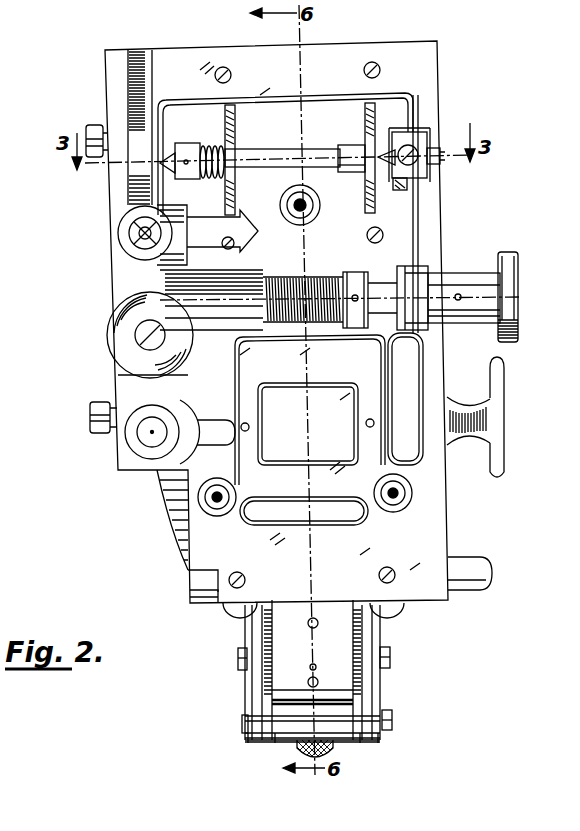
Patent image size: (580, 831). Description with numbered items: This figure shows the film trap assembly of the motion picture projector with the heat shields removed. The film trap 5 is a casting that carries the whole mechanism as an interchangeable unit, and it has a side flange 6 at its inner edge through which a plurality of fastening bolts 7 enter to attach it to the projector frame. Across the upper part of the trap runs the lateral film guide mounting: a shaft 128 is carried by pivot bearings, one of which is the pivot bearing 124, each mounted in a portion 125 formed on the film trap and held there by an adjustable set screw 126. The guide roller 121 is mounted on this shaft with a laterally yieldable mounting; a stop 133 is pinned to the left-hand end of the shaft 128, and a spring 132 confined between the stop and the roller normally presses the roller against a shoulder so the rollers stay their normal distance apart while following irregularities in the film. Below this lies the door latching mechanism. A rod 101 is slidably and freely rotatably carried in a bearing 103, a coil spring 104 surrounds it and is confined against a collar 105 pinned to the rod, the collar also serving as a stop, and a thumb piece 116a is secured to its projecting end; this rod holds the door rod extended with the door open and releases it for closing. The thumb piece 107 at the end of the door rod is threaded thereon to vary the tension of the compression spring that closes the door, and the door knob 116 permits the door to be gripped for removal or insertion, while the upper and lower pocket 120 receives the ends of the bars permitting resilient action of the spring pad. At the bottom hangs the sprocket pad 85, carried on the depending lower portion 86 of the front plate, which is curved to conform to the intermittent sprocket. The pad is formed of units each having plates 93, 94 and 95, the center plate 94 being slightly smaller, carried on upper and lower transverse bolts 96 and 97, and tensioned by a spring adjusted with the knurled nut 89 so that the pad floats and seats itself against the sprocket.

The film trap 5 is at (438, 63).
The side flange 6 is at (108, 72).
The fastening bolts 7 is at (92, 128).
The sprocket pad 85 is at (238, 658).
The depending lower portion 86 is at (315, 664).
The knurled nut 89 is at (313, 762).
The plate 93 is at (256, 743).
The plate 94 is at (268, 744).
The plate 95 is at (276, 744).
The upper transverse bolt 96 is at (390, 650).
The lower transverse bolt 97 is at (393, 716).
The rod 101 is at (348, 274).
The bearing 103 is at (425, 268).
The coil spring 104 is at (284, 278).
The collar 105 is at (358, 276).
The thumb piece 107 is at (108, 335).
The door knob 116 is at (504, 409).
The thumb piece 116a is at (510, 257).
The pocket 120 is at (236, 120).
The guide roller 121 is at (365, 117).
The pivot bearing 124 is at (441, 166).
The portion 125 is at (427, 133).
The adjustable set screw 126 is at (400, 185).
The shaft 128 is at (308, 150).
The spring 132 is at (211, 153).
The stop 133 is at (187, 143).